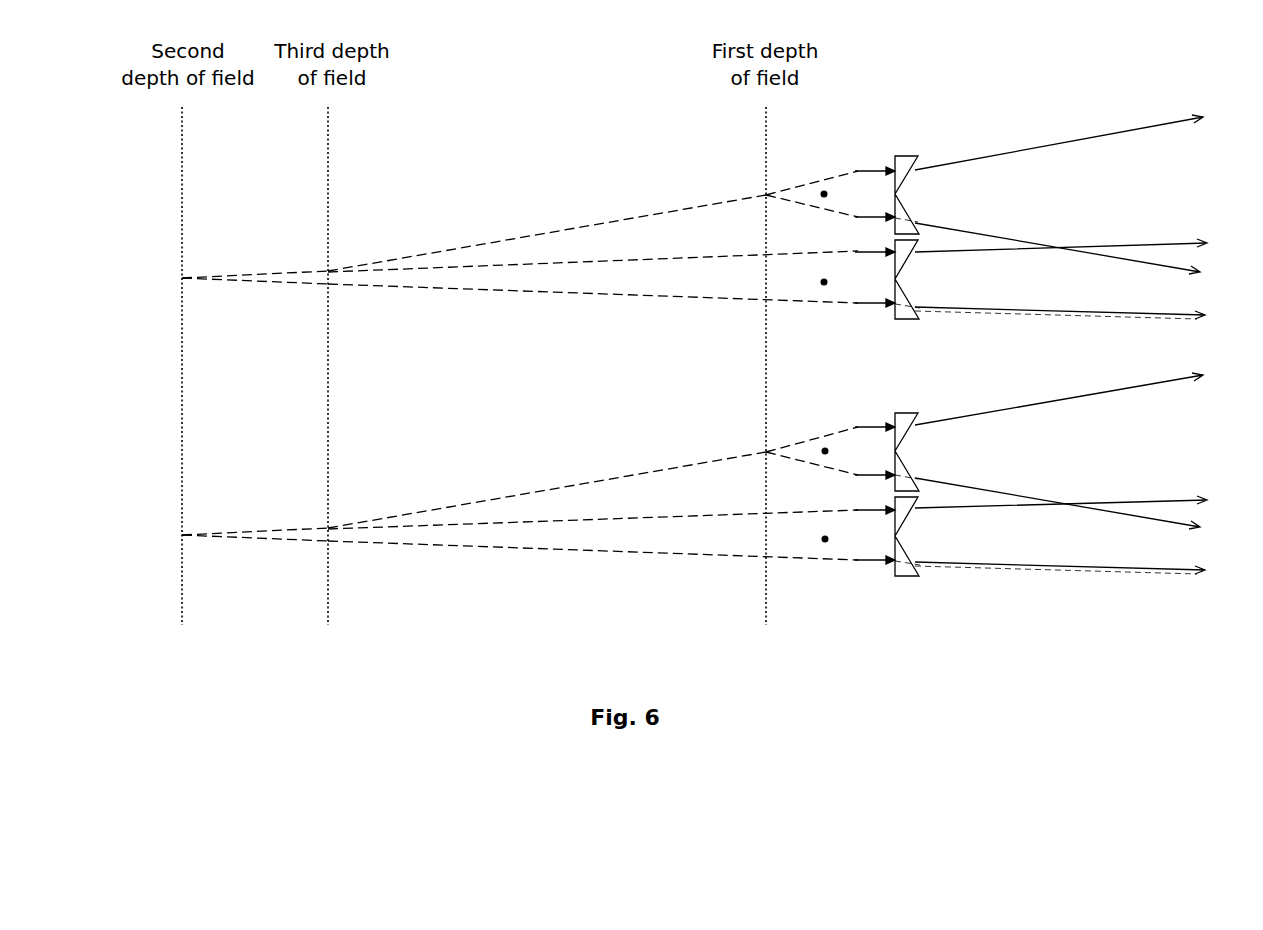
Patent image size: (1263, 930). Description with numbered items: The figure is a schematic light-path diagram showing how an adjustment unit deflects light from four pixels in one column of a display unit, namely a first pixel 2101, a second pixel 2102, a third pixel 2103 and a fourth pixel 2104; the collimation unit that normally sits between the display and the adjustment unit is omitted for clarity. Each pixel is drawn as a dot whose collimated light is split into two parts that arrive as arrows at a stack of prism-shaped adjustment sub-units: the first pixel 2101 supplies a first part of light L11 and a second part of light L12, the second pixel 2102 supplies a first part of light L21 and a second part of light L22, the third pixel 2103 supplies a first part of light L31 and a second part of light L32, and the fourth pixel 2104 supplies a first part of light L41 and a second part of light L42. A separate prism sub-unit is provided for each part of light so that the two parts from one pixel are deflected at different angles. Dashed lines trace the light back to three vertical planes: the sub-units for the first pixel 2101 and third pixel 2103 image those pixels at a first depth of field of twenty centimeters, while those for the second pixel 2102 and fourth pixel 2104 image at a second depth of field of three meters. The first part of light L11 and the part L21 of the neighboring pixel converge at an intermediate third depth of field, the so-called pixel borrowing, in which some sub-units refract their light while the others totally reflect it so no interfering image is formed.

The first pixel 2101 is at (806, 188).
The second pixel 2102 is at (810, 278).
The third pixel 2103 is at (810, 447).
The fourth pixel 2104 is at (810, 535).
The first part of light L11 is at (875, 161).
The second part of light L12 is at (875, 208).
The first part of light L21 is at (875, 245).
The second part of light L22 is at (875, 295).
The first part of light L31 is at (875, 417).
The second part of light L32 is at (875, 466).
The first part of light L41 is at (875, 502).
The second part of light L42 is at (875, 551).